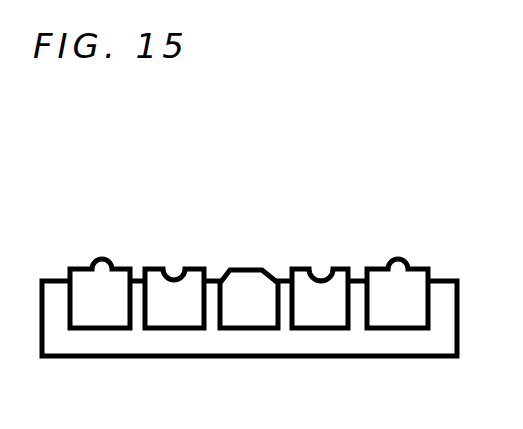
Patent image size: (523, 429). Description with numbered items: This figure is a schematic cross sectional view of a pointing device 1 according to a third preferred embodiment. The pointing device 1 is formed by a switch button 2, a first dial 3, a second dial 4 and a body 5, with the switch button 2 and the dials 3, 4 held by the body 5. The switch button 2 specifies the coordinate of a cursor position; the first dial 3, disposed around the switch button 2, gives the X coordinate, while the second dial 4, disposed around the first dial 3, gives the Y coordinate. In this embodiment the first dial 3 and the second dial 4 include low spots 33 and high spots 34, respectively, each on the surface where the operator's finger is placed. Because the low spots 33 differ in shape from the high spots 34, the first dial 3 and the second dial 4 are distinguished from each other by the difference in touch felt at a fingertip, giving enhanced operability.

The pointing device 1 is at (30, 217).
The switch button 2 is at (250, 315).
The first dial 3 is at (338, 271).
The second dial 4 is at (417, 288).
The body 5 is at (445, 333).
The low spots 33 is at (173, 277).
The high spots 34 is at (99, 255).